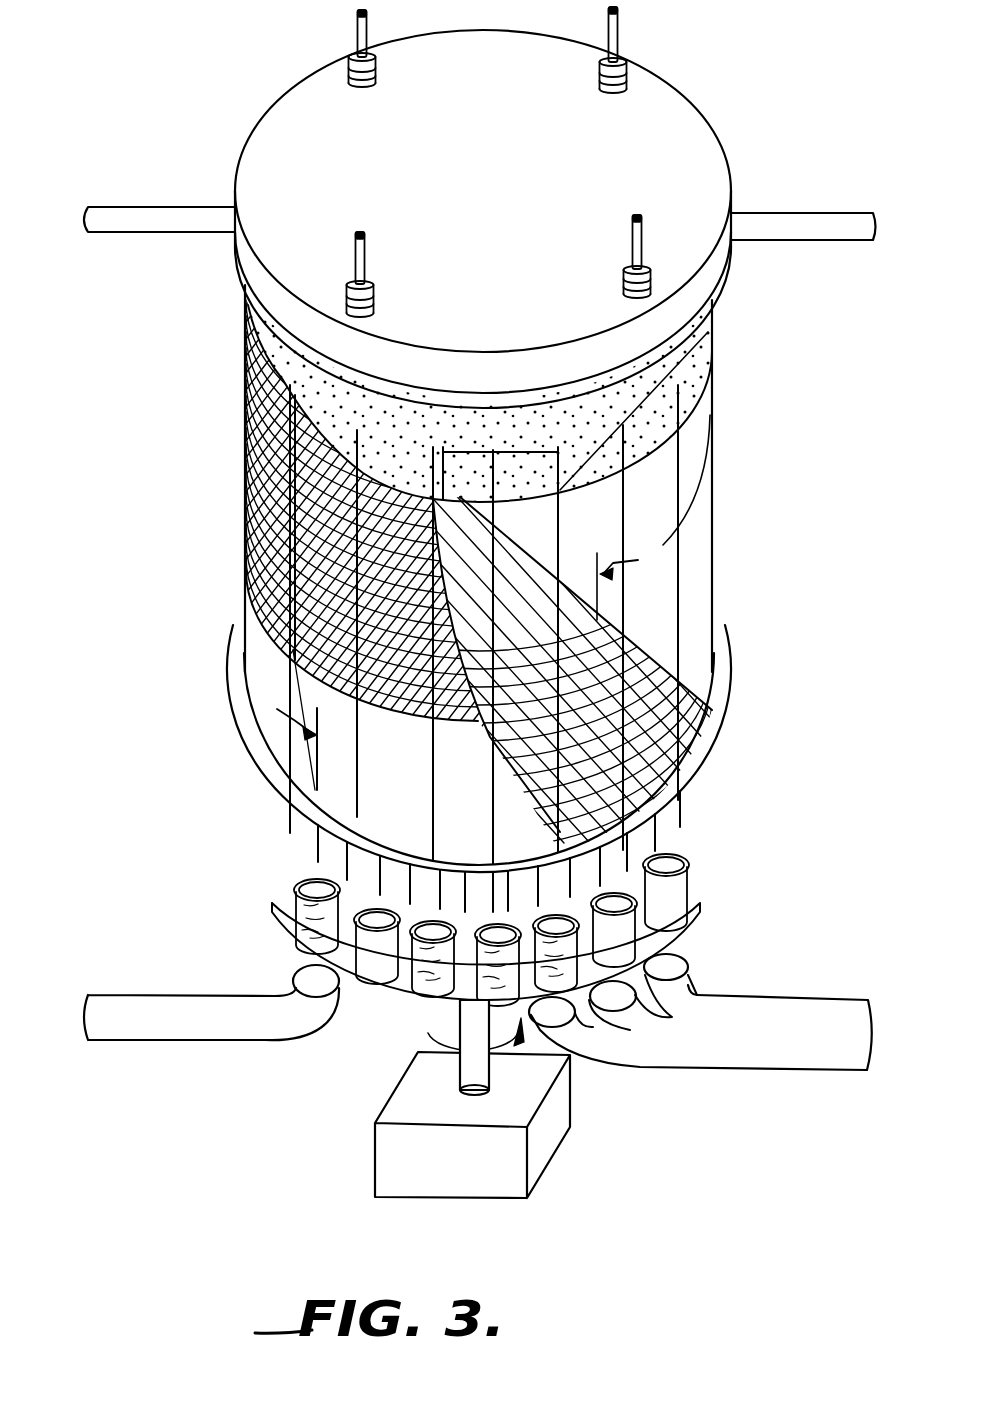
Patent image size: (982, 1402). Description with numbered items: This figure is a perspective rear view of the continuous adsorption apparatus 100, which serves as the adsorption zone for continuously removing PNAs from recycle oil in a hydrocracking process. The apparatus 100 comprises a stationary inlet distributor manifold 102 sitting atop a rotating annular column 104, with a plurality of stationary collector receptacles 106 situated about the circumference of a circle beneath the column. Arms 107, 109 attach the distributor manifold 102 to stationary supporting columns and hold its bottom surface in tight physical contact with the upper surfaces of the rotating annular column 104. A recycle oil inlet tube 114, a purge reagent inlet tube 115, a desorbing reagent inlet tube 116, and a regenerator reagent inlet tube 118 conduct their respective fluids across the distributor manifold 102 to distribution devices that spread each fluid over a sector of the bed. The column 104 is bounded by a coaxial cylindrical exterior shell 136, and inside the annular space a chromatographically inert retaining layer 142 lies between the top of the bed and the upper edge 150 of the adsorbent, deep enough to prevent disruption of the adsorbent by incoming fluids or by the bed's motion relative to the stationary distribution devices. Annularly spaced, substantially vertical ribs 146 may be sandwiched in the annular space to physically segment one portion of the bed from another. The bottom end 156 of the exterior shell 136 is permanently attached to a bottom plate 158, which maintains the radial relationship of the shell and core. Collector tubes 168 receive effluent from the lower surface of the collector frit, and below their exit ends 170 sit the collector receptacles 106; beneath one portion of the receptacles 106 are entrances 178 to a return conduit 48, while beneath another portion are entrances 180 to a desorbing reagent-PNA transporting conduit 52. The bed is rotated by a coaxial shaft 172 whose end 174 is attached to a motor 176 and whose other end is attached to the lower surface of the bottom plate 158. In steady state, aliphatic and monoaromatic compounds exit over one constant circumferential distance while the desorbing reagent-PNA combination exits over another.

The continuous adsorption apparatus 100 is at (158, 436).
The stationary inlet distributor manifold 102 is at (733, 170).
The rotating annular column 104 is at (712, 533).
The stationary collector receptacles 106 is at (677, 903).
The arm 107 is at (158, 233).
The arm 109 is at (822, 210).
The recycle oil inlet tube 114 is at (356, 22).
The purge reagent inlet tube 115 is at (365, 262).
The desorbing reagent inlet tube 116 is at (630, 238).
The regenerator reagent inlet tube 118 is at (618, 33).
The cylindrical exterior shell 136 is at (245, 612).
The chromatographically inert retaining layer 142 is at (712, 368).
The substantially vertical ribs 146 is at (680, 588).
The upper edge of the adsorbent 150 is at (690, 405).
The bottom end of the exterior shell 156 is at (272, 752).
The bottom plate 158 is at (722, 748).
The collector tubes 168 is at (292, 820).
The exit ends of the collector tubes 170 is at (660, 845).
The coaxial shaft 172 is at (468, 1012).
The end of the shaft 174 is at (460, 1080).
The motor 176 is at (385, 1150).
The entrances to the return conduit 178 is at (298, 975).
The entrances to the desorbing reagent-PNA transporting conduit 180 is at (677, 960).
The return conduit 48 is at (167, 1047).
The desorbing reagent-PNA transporting conduit 52 is at (772, 1070).